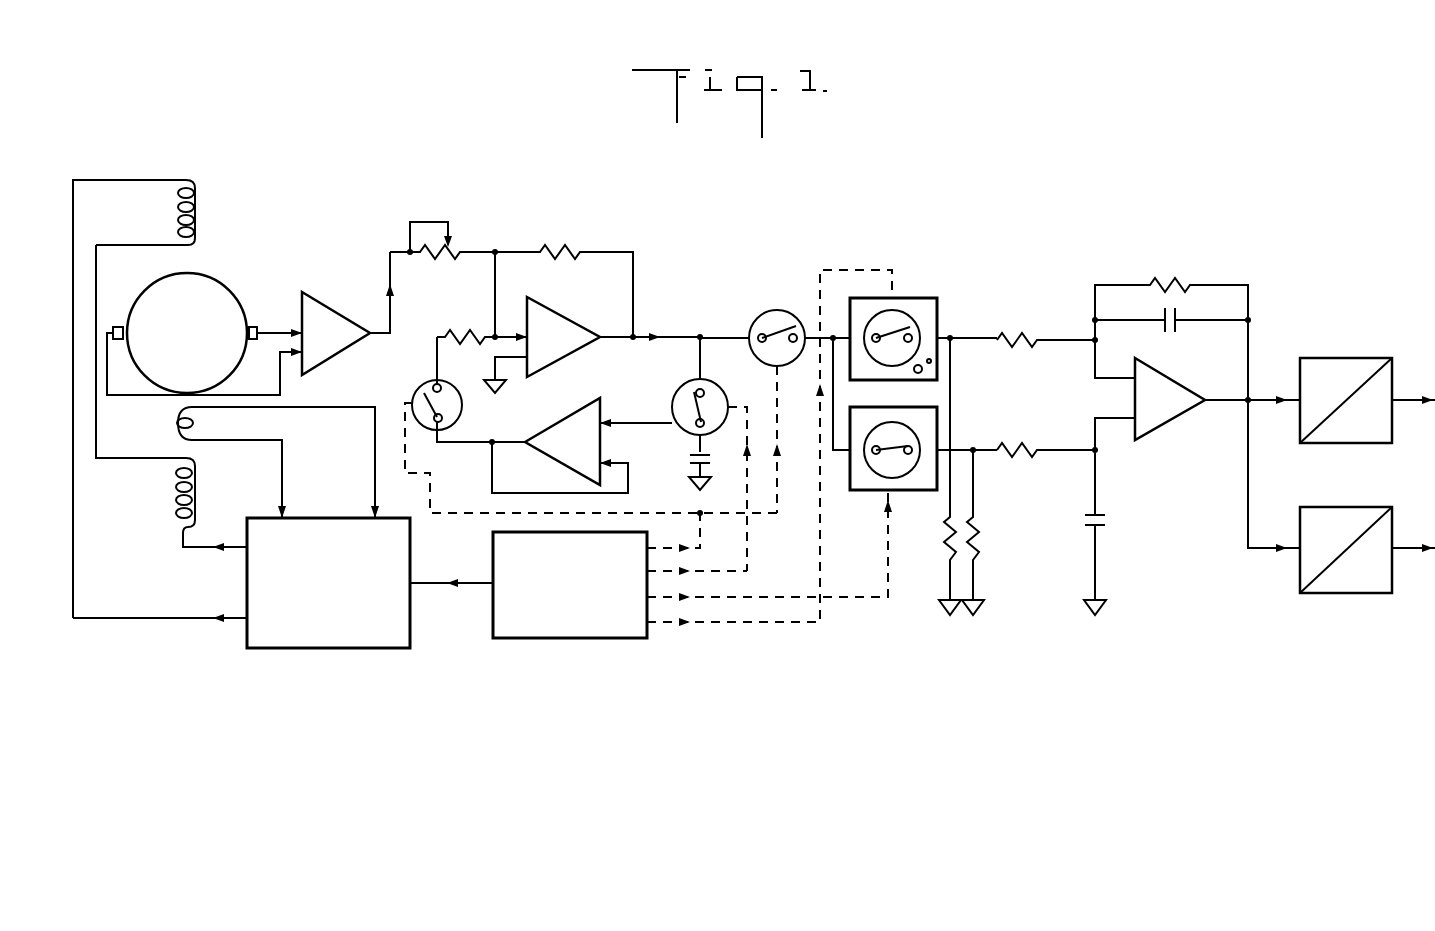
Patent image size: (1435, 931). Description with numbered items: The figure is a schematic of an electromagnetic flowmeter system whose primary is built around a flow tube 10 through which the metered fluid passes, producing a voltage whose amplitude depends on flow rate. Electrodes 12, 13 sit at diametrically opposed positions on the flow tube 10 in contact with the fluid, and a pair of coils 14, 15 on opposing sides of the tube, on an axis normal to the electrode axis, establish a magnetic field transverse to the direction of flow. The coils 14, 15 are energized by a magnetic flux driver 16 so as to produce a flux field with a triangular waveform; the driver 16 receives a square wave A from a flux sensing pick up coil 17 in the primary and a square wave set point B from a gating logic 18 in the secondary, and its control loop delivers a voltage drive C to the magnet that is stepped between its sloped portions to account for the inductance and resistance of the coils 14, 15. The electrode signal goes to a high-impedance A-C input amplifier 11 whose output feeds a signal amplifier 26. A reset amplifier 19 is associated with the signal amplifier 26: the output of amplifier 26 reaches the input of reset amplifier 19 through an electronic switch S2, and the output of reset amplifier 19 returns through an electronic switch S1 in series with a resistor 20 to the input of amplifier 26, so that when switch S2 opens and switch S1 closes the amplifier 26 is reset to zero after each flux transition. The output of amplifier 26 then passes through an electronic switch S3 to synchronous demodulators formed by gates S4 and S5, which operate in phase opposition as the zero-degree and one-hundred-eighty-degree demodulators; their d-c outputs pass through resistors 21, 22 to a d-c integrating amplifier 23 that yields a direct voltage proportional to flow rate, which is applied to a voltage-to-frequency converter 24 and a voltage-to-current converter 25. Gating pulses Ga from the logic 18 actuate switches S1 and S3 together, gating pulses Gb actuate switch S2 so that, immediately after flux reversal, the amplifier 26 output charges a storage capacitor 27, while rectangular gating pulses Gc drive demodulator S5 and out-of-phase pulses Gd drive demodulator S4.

The flow tube 10 is at (236, 294).
The A-C input amplifier 11 is at (343, 320).
The electrode 12 is at (121, 326).
The electrode 13 is at (253, 341).
The coil 14 is at (197, 192).
The coil 15 is at (195, 495).
The magnetic flux driver 16 is at (410, 650).
The flux sensing pick up coil 17 is at (176, 423).
The gating logic 18 is at (510, 640).
The reset amplifier 19 is at (600, 400).
The resistor 20 is at (458, 327).
The resistor 21 is at (1018, 330).
The resistor 22 is at (1032, 445).
The d-c integrating amplifier 23 is at (1186, 388).
The voltage-to-frequency converter 24 is at (1390, 360).
The voltage-to-current converter 25 is at (1390, 508).
The signal amplifier 26 is at (571, 320).
The storage capacitor 27 is at (686, 456).
The electronic switch S1 is at (463, 408).
The electronic switch S2 is at (735, 386).
The electronic switch S3 is at (783, 308).
The demodulator gate S4 is at (937, 300).
The demodulator gate S5 is at (945, 408).
The square wave from sensing coil A is at (285, 490).
The square wave set point B is at (430, 586).
The voltage drive to the magnet C is at (120, 612).
The gating pulses Ga is at (712, 552).
The gating pulses Gb is at (747, 571).
The gating pulses Gc is at (858, 598).
The gating pulses Gd is at (770, 622).